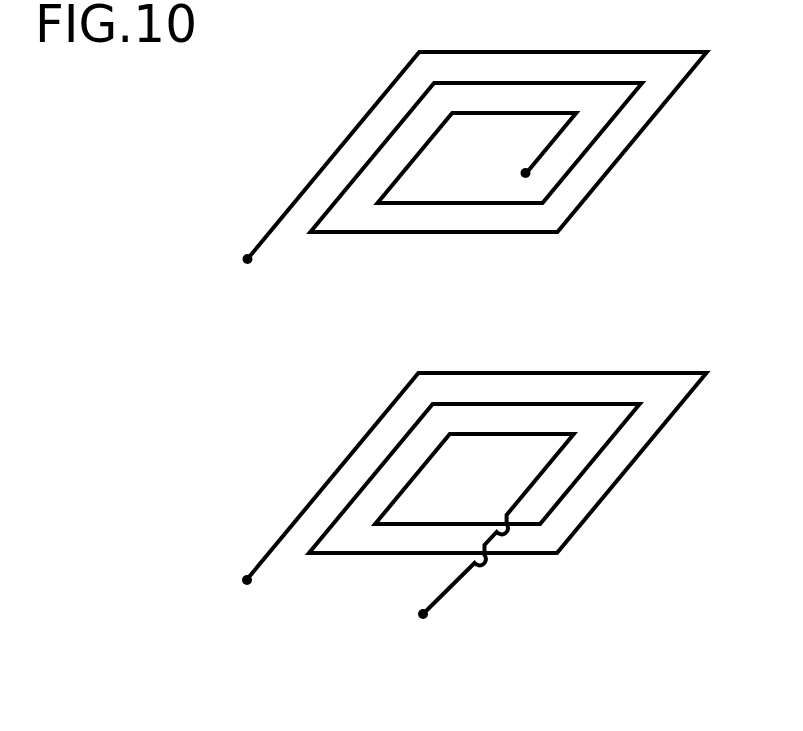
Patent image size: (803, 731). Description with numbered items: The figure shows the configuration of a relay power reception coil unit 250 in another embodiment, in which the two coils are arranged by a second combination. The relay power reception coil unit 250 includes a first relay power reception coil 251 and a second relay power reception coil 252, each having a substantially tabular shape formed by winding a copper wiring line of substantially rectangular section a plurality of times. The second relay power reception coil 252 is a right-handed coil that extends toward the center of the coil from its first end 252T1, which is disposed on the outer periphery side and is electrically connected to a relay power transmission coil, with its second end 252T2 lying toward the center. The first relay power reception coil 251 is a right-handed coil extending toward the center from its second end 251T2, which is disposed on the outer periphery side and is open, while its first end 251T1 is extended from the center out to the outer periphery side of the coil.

The relay power reception coil unit 250 is at (183, 84).
The first relay power reception coil 251 is at (365, 438).
The second relay power reception coil 252 is at (367, 117).
The first end 251T1 is at (426, 618).
The second end 251T2 is at (250, 585).
The first end 252T1 is at (250, 263).
The second end 252T2 is at (528, 177).